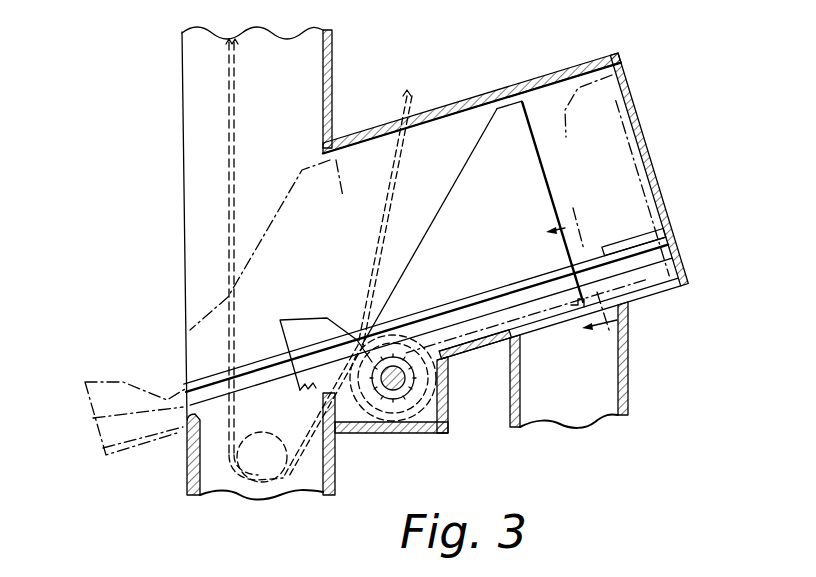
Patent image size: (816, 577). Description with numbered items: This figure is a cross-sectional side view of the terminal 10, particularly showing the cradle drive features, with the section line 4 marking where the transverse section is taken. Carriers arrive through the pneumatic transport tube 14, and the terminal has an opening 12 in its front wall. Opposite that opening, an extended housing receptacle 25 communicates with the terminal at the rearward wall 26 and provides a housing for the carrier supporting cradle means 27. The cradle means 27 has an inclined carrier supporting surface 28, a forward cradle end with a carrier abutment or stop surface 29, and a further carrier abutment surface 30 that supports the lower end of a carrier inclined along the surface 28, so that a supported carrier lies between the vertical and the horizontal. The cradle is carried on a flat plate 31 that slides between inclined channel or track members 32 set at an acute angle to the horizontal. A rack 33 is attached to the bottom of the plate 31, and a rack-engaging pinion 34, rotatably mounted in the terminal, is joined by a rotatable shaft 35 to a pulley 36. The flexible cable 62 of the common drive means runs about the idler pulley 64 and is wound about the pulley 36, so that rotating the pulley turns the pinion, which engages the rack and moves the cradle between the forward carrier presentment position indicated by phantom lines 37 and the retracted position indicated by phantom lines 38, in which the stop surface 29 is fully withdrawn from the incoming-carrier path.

The terminal 10 is at (102, 226).
The opening 12 is at (186, 297).
The pneumatic transport tube 14 is at (214, 500).
The extended housing receptacle 25 is at (620, 54).
The rearward wall 26 is at (334, 82).
The carrier supporting cradle means 27 is at (540, 177).
The inclined carrier supporting surface 28 is at (433, 207).
The carrier abutment or stop surface 29 is at (312, 316).
The carrier abutment surface 30 is at (345, 333).
The flat plate 31 is at (527, 267).
The inclined channel or track members 32 is at (632, 243).
The rack 33 is at (298, 392).
The rack-engaging pinion 34 is at (402, 400).
The rotatable shaft 35 is at (389, 387).
The pulley 36 is at (449, 402).
The phantom lines (forward carrier presentment position) 37 is at (88, 417).
The phantom lines (retracted position) 38 is at (632, 108).
The flexible cable 62 is at (420, 90).
The idler pulley 64 is at (283, 490).
The section line 4- 4 is at (581, 273).